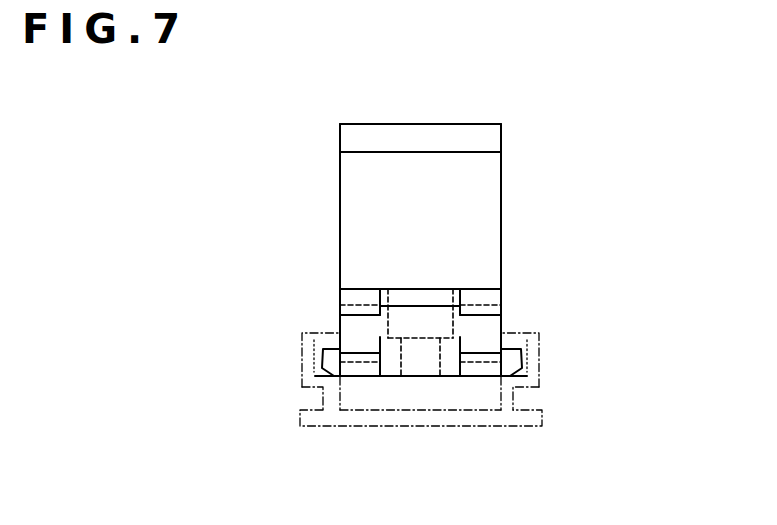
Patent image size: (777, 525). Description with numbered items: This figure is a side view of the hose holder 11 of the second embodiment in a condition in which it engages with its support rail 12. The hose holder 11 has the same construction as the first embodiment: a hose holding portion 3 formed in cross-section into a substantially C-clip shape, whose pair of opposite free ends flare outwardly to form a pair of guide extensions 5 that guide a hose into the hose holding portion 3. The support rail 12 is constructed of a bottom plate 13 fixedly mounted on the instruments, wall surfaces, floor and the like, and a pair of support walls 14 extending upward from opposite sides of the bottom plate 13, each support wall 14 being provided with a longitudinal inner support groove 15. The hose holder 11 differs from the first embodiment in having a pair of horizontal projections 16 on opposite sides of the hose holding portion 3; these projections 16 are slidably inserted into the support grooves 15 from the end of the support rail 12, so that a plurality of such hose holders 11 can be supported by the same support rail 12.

The hose holding portion 3 is at (490, 187).
The guide extensions 5 is at (340, 135).
The hose holder 11 is at (523, 119).
The support rail 12 is at (302, 343).
The bottom plate 13 is at (408, 426).
The support walls 14 is at (302, 385).
The support grooves 15 is at (524, 358).
The horizontal projections 16 is at (323, 352).